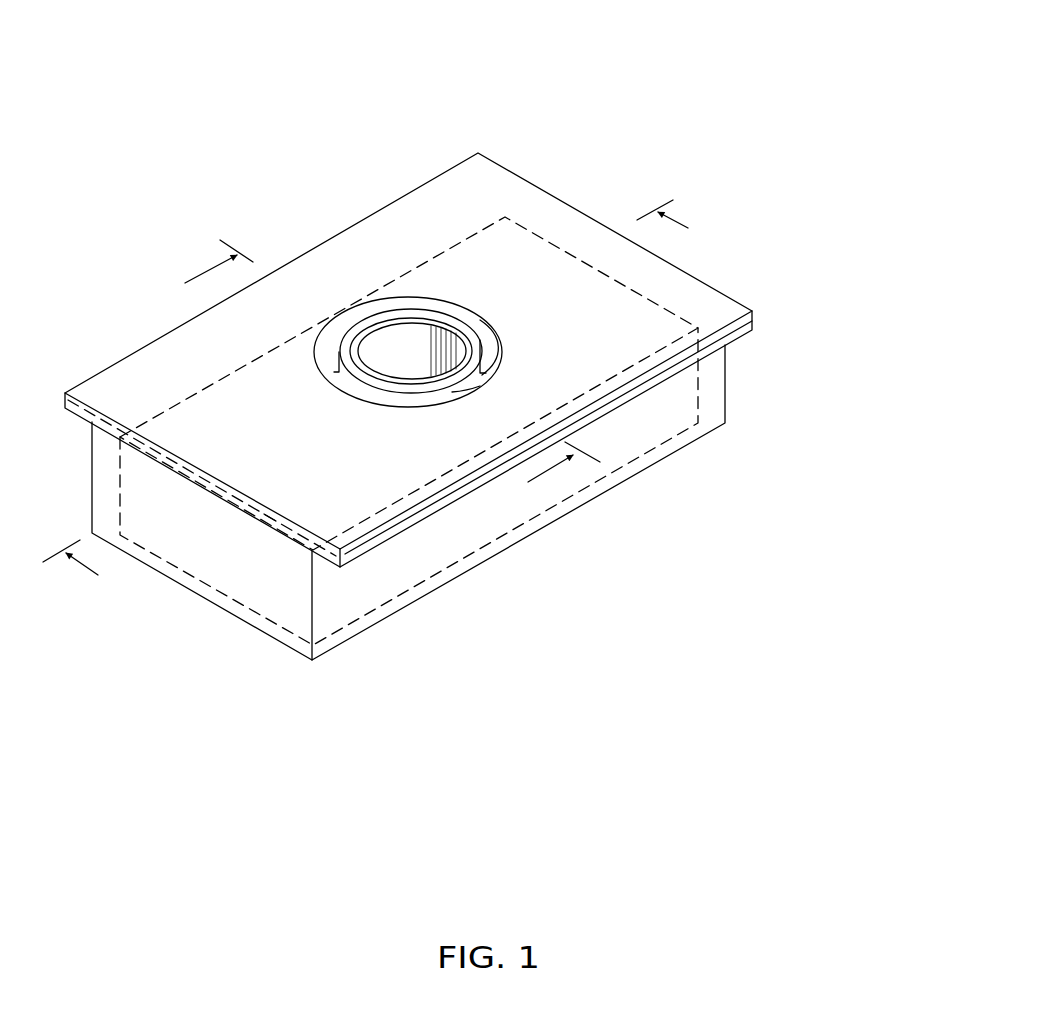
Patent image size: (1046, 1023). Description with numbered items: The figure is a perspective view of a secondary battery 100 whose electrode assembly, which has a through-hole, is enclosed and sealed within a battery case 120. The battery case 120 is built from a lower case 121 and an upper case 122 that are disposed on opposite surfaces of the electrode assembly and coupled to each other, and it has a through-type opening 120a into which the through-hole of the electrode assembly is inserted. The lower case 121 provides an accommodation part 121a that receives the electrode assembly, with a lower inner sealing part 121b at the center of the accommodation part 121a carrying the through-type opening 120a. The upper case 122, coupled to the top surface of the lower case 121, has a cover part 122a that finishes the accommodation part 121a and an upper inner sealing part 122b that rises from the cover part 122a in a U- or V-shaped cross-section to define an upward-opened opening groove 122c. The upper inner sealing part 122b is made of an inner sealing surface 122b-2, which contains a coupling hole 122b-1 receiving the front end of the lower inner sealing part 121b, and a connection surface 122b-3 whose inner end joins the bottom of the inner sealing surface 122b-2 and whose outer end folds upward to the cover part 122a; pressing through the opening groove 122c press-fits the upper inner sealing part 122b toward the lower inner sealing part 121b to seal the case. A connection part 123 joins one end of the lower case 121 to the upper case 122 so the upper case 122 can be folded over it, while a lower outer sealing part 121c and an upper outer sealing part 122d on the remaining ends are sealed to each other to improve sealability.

The secondary battery 100 is at (487, 102).
The battery case 120 is at (535, 784).
The through-type opening 120a is at (411, 347).
The lower case 121 is at (661, 628).
The accommodation part 121a is at (527, 532).
The lower inner sealing part 121b is at (388, 385).
The lower outer sealing part 121c is at (407, 520).
The upper case 122 is at (858, 531).
The cover part 122a is at (628, 343).
The upper inner sealing part 122b is at (819, 437).
The coupling hole 122b-1 is at (436, 345).
The inner sealing surface 122b-2 is at (466, 388).
The connection surface 122b-3 is at (495, 350).
The opening groove 122c is at (483, 373).
The upper outer sealing part 122d is at (746, 324).
The connection part 123 is at (270, 520).